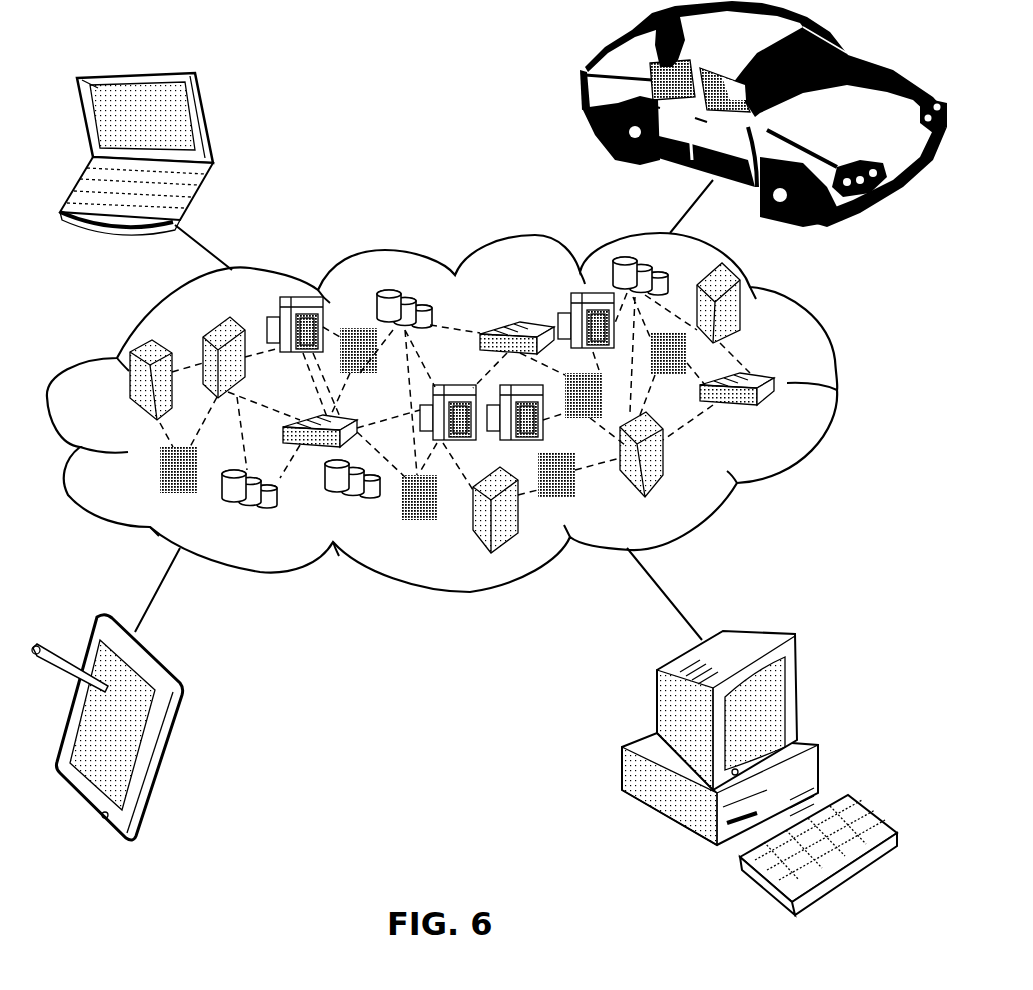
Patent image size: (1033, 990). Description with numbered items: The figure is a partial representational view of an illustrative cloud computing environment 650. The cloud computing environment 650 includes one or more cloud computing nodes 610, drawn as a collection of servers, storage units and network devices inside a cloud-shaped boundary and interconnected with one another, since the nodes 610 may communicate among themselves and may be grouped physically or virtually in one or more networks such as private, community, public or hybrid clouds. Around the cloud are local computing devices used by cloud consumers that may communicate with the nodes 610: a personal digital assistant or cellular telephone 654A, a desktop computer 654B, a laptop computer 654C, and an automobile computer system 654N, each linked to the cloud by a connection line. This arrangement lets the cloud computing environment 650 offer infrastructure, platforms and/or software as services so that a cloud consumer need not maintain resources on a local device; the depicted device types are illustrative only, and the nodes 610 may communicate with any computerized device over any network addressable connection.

The cloud computing nodes 610 is at (780, 417).
The cloud computing environment 650 is at (837, 390).
The personal digital assistant (PDA) or cellular telephone 654A is at (172, 720).
The desktop computer 654B is at (763, 637).
The laptop computer 654C is at (207, 120).
The automobile computer system 654N is at (583, 90).